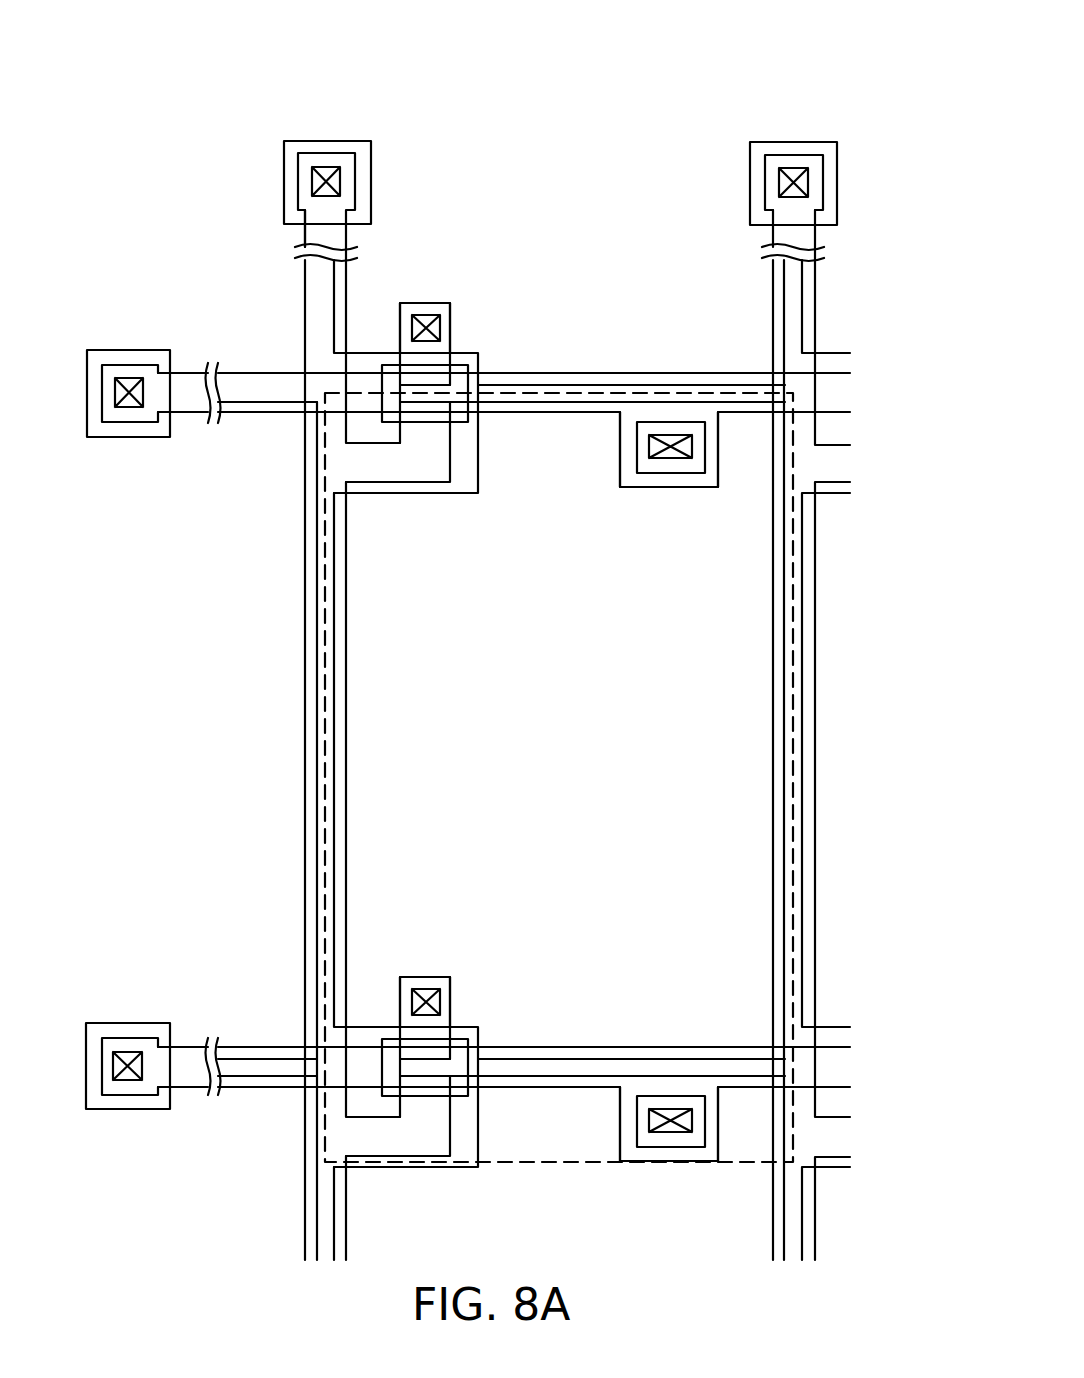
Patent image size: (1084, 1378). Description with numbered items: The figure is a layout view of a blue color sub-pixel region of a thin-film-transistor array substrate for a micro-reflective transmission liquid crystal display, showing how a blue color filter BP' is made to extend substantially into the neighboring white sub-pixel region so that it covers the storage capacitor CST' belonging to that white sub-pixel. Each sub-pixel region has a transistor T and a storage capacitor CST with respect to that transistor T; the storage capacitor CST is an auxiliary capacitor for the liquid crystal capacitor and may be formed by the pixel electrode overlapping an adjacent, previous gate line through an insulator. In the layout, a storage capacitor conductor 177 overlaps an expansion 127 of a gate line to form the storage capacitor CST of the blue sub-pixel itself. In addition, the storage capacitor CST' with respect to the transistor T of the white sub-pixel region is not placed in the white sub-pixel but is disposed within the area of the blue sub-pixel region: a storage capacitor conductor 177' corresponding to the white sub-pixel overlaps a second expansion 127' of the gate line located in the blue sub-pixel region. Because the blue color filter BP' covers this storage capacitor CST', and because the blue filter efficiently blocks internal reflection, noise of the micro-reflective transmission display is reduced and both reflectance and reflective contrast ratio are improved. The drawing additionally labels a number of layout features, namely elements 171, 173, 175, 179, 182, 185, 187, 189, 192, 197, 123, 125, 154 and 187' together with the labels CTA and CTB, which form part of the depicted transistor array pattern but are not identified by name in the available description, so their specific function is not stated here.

The data line 171 is at (305, 678).
The drain electrode 173 is at (398, 483).
The contact hole 175 is at (425, 303).
The storage capacitor conductor 177 is at (691, 496).
The contact hole 179 is at (787, 168).
The contact hole 182 is at (128, 378).
The source electrode contact assistant 185 is at (441, 327).
The contact hole 187 is at (657, 391).
The data pad 189 is at (750, 180).
The pixel electrode layer 192 is at (150, 1110).
The data contact assistant 197 is at (823, 182).
The gate electrode 123 is at (443, 402).
The gate pad 125 is at (135, 423).
The expansion of gate line 127 is at (661, 491).
The semiconductor layer 154 is at (425, 423).
The expansion of gate line 127' is at (660, 1165).
The storage capacitor conductor 177' is at (694, 1169).
The contact hole 187' is at (661, 1064).
The storage capacitor CST is at (651, 562).
The storage capacitor CST' is at (653, 1236).
The test pad capacitor A CTA is at (167, 999).
The test pad capacitor B CTB is at (848, 121).
The transistor T is at (399, 957).
The blue color filter BP' is at (611, 777).